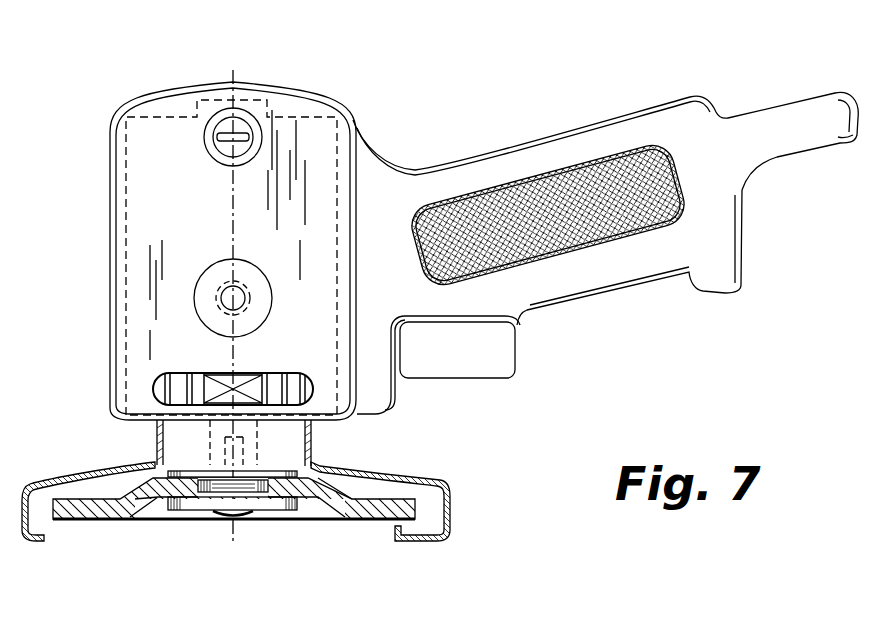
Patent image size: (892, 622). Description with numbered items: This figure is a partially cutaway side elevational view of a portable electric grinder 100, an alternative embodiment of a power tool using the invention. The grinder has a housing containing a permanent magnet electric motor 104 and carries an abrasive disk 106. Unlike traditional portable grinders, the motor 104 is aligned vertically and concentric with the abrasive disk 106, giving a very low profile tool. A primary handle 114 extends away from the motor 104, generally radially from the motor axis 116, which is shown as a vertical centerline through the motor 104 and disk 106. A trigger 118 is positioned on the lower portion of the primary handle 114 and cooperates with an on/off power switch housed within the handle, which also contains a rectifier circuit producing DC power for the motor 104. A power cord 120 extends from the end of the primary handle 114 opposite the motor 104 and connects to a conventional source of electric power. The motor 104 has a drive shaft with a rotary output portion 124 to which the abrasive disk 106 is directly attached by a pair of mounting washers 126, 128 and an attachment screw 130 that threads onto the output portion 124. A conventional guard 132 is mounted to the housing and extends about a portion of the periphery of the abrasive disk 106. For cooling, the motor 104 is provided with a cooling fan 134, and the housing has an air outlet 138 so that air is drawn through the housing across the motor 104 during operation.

The portable electric grinder 100 is at (440, 275).
The permanent magnet electric motor 104 is at (302, 103).
The abrasive disk 106 is at (350, 520).
The primary handle 114 is at (529, 134).
The motor axis 116 is at (232, 72).
The trigger 118 is at (517, 365).
The power cord 120 is at (762, 117).
The rotary output portion 124 is at (208, 453).
The mounting washer 126 is at (197, 476).
The mounting washer 128 is at (203, 502).
The attachment screw 130 is at (217, 520).
The guard 132 is at (413, 475).
The cooling fan 134 is at (160, 390).
The air outlet 138 is at (168, 374).